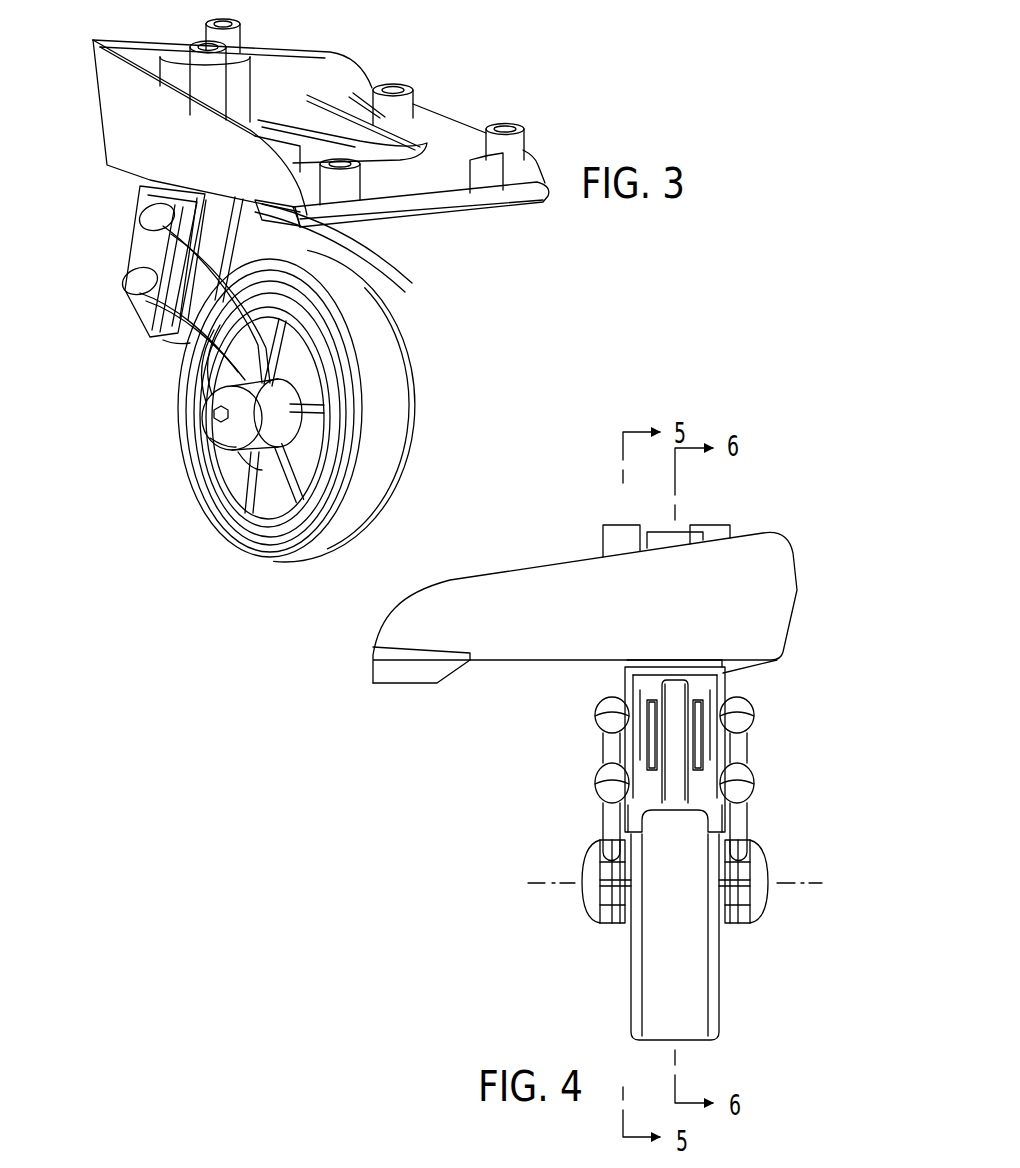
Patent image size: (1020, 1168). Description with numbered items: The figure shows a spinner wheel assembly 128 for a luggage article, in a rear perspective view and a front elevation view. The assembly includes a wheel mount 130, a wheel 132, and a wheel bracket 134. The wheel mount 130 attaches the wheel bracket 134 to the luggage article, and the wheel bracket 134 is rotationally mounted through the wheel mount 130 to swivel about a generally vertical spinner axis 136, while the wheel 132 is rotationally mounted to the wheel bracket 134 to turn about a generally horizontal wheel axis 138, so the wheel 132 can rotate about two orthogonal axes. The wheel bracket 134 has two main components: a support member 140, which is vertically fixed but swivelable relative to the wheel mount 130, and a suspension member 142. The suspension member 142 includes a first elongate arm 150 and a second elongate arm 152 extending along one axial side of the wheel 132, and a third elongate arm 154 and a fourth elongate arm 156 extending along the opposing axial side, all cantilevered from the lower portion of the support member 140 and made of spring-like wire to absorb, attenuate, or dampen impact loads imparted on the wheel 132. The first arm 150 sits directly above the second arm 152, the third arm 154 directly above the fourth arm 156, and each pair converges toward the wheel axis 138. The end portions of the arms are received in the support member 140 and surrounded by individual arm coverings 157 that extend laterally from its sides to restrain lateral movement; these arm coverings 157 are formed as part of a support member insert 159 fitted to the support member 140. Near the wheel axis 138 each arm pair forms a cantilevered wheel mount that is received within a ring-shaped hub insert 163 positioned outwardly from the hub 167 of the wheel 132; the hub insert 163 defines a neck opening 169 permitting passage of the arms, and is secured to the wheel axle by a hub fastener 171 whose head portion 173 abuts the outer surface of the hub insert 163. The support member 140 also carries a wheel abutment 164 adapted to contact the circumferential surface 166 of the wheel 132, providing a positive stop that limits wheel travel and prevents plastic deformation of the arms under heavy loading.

In FIG. 3, the spinner wheel assembly 128 is at (530, 112).
In FIG. 4, the spinner wheel assembly 128 is at (797, 522).
In FIG. 3, the wheel mount 130 is at (340, 62).
In FIG. 4, the wheel mount 130 is at (512, 580).
In FIG. 3, the wheel 132 is at (400, 393).
In FIG. 4, the wheel 132 is at (717, 993).
In FIG. 3, the wheel bracket 134 is at (108, 307).
In FIG. 4, the wheel bracket 134 is at (530, 758).
In FIG. 4, the spinner axis 136 is at (673, 519).
In FIG. 4, the wheel axis 138 is at (550, 883).
In FIG. 3, the support member 140 is at (137, 247).
In FIG. 4, the support member 140 is at (718, 688).
In FIG. 3, the suspension member 142 is at (163, 348).
In FIG. 4, the suspension member 142 is at (593, 807).
In FIG. 3, the first elongate arm 150 is at (233, 331).
In FIG. 4, the first elongate arm 150 is at (737, 760).
In FIG. 3, the second elongate arm 152 is at (213, 372).
In FIG. 4, the second elongate arm 152 is at (740, 822).
In FIG. 3, the third elongate arm 154 is at (280, 237).
In FIG. 4, the third elongate arm 154 is at (633, 749).
In FIG. 4, the fourth elongate arm 156 is at (610, 823).
In FIG. 3, the arm covering 157 is at (150, 220).
In FIG. 4, the arm covering 157 is at (612, 706).
In FIG. 3, the support member insert 159 is at (147, 258).
In FIG. 4, the support member insert 159 is at (630, 740).
In FIG. 3, the hub insert 163 is at (262, 445).
In FIG. 4, the hub insert 163 is at (610, 925).
In FIG. 3, the wheel abutment 164 is at (300, 241).
In FIG. 3, the circumferential surface 166 is at (373, 338).
In FIG. 3, the hub 167 is at (293, 435).
In FIG. 4, the hub 167 is at (624, 940).
In FIG. 4, the neck opening 169 is at (617, 865).
In FIG. 3, the hub fastener 171 is at (230, 457).
In FIG. 4, the hub fastener 171 is at (594, 906).
In FIG. 3, the head portion 173 is at (217, 436).
In FIG. 4, the head portion 173 is at (598, 917).